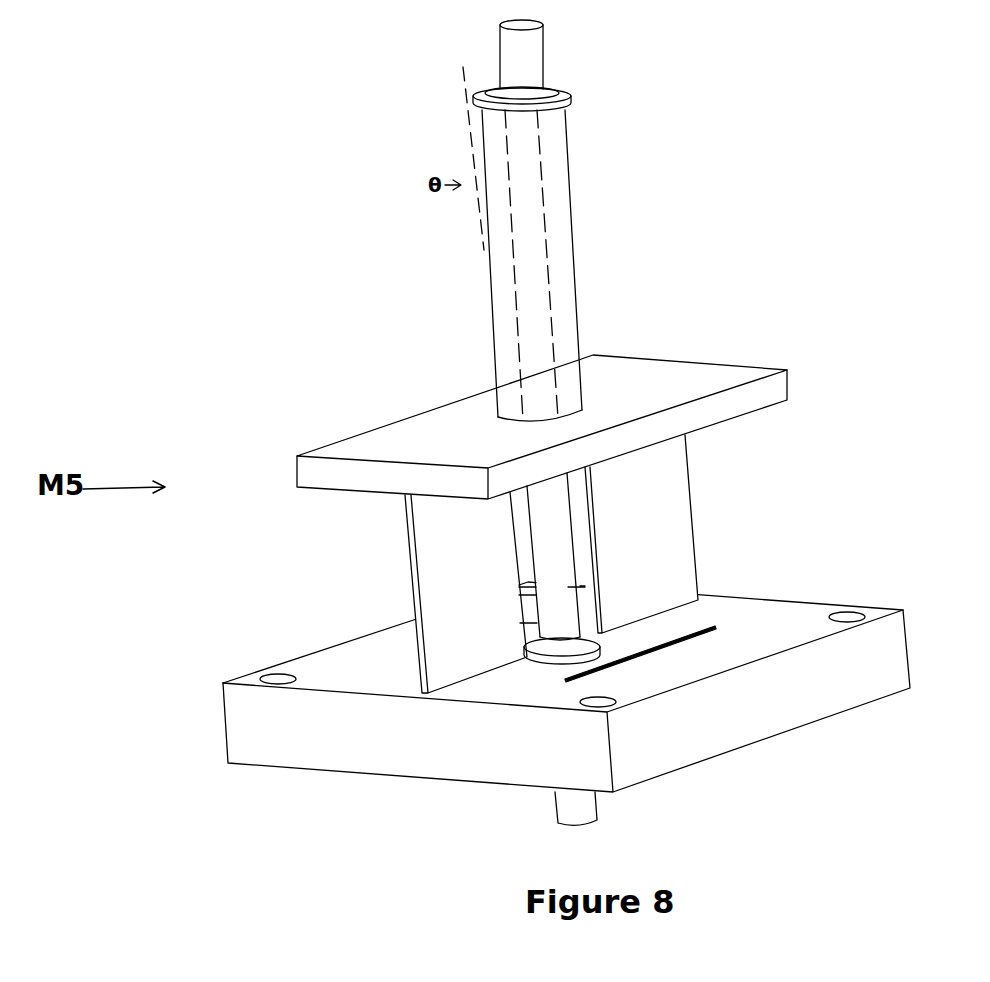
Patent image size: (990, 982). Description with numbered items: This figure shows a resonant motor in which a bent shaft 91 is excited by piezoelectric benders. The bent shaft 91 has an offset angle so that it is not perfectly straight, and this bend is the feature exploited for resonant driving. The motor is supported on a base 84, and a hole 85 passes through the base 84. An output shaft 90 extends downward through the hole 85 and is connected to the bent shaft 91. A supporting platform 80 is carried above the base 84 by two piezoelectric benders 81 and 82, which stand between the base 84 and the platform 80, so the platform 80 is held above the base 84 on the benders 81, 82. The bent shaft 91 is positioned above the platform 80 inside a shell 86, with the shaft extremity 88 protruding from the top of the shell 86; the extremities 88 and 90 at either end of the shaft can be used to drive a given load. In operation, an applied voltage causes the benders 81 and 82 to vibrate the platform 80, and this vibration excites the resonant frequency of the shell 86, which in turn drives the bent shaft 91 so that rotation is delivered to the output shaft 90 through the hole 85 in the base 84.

The supporting platform 80 is at (748, 370).
The piezoelectric bender 81 is at (413, 566).
The piezoelectric bender 82 is at (683, 507).
The base 84 is at (898, 636).
The hole 85 is at (543, 657).
The shell 86 is at (567, 248).
The shaft extremity 88 is at (535, 47).
The output shaft 90 is at (565, 813).
The bent shaft 91 is at (537, 182).